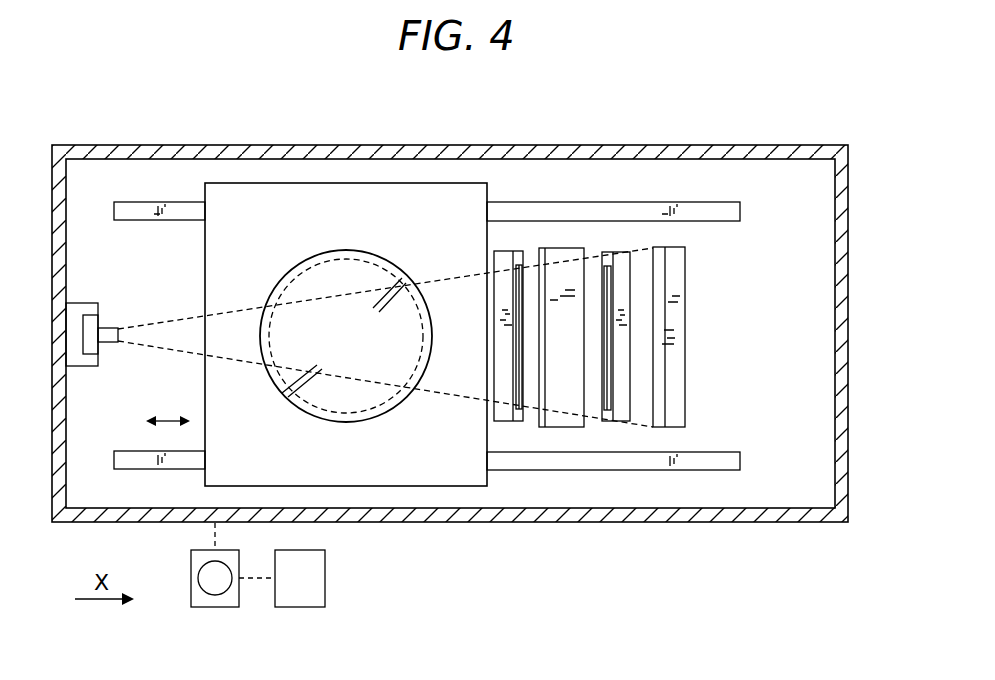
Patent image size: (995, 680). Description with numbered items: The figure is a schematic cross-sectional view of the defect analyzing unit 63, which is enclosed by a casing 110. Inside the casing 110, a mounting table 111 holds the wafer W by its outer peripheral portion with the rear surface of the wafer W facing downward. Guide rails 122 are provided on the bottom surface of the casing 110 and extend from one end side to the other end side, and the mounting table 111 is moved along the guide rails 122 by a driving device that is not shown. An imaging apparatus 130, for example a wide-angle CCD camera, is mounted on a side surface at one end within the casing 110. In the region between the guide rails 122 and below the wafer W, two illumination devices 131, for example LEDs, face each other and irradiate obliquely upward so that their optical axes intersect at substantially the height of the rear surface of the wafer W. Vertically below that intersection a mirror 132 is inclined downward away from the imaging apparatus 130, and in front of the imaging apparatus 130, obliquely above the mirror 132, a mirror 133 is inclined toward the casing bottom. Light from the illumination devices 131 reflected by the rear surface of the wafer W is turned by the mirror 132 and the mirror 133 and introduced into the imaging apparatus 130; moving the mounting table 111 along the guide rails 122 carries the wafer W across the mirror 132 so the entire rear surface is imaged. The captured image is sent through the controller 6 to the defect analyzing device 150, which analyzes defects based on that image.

The defect analyzing unit 63 is at (551, 132).
The casing 110 is at (652, 147).
The mounting table 111 is at (492, 187).
The guide rails 122 is at (722, 201).
The imaging apparatus 130 is at (103, 327).
The illumination devices 131 is at (502, 422).
The mirror 132 is at (562, 428).
The mirror 133 is at (686, 335).
The controller 6 is at (215, 608).
The defect analyzing device 150 is at (300, 608).
The wafer W is at (392, 260).